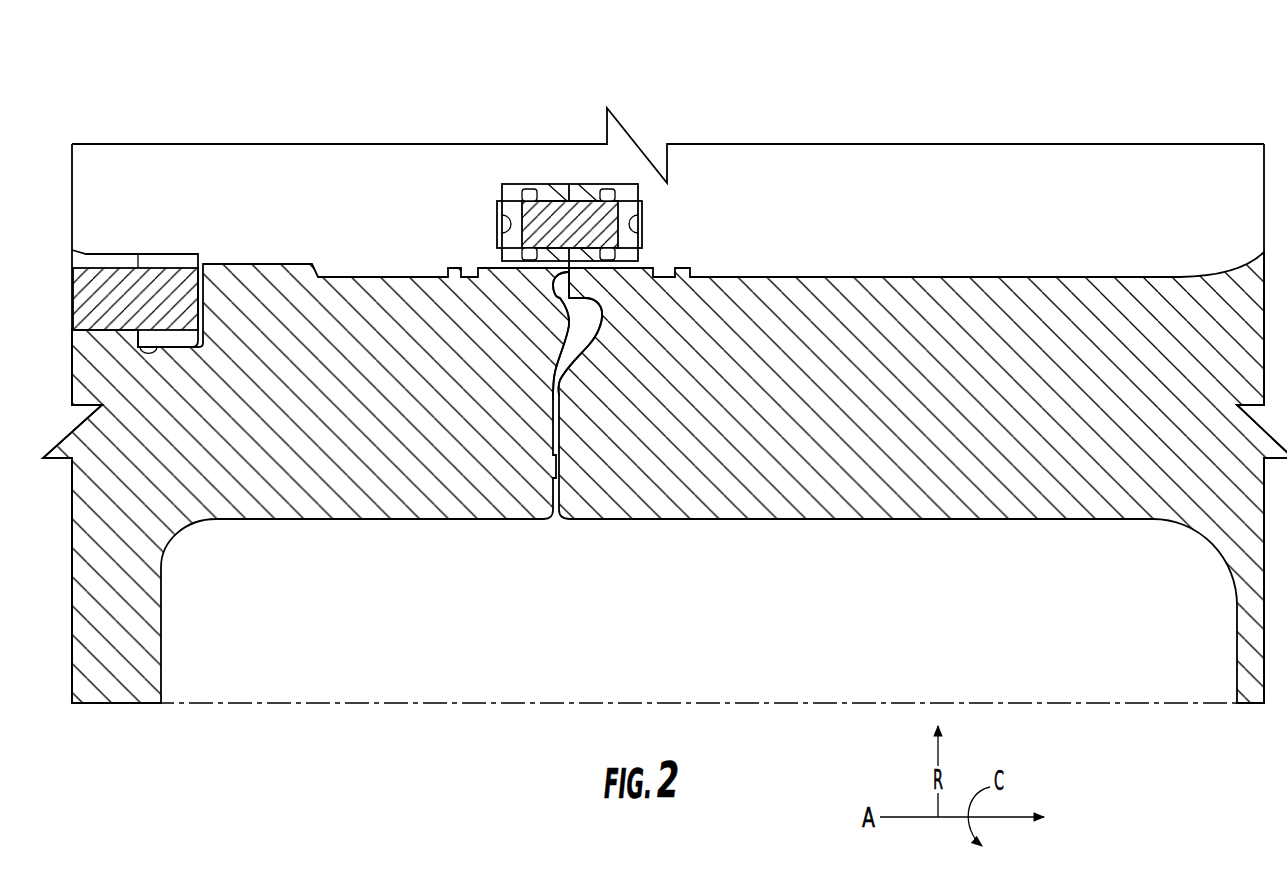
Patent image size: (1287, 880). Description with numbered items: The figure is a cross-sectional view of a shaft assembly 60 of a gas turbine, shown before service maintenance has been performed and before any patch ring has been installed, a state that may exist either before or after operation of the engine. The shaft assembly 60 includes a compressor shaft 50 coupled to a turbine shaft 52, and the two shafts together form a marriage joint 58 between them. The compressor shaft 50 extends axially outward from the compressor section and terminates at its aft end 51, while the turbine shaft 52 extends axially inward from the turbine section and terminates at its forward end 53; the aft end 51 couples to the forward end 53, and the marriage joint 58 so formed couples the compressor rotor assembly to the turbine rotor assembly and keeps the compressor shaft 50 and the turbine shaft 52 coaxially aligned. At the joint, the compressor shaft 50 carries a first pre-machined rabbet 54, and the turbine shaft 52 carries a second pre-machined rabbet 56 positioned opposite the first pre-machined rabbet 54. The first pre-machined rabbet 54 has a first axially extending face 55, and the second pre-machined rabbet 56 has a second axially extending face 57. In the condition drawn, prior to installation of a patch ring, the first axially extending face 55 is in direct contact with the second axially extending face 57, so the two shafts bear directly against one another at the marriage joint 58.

The compressor shaft 50 is at (298, 317).
The aft end 51 is at (380, 549).
The turbine shaft 52 is at (1028, 290).
The forward end 53 is at (861, 546).
The first pre-machined rabbet 54 is at (533, 318).
The first axially extending face 55 is at (558, 324).
The second pre-machined rabbet 56 is at (620, 307).
The second axially extending face 57 is at (592, 296).
The marriage joint 58 is at (520, 288).
The shaft assembly 60 is at (97, 80).